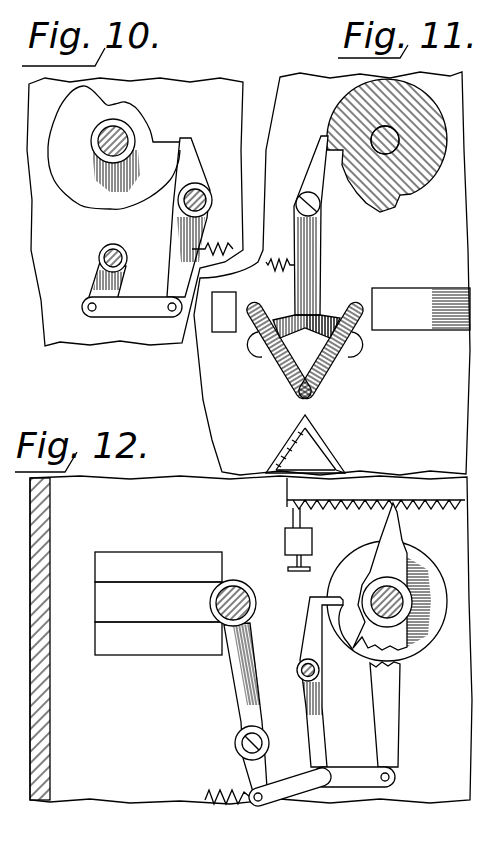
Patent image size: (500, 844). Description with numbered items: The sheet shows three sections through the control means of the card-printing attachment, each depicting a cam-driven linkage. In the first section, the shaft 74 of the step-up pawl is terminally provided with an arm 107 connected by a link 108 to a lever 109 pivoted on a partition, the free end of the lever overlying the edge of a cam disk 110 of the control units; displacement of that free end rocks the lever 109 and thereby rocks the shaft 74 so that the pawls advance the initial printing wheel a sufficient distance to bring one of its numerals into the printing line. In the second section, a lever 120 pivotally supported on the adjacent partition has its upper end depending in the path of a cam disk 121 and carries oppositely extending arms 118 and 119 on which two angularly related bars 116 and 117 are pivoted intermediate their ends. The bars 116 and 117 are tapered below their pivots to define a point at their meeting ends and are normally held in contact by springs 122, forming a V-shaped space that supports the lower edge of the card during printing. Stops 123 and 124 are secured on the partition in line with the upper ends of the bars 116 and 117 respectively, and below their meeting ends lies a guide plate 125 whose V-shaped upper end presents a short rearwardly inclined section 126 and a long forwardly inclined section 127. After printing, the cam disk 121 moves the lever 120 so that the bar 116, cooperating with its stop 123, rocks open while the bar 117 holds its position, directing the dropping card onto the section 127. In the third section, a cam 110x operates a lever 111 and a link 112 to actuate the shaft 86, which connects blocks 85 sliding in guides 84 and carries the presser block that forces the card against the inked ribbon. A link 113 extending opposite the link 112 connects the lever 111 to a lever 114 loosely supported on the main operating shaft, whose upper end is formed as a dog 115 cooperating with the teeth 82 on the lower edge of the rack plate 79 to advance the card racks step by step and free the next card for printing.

In FIG. 10, the cam disk 110 is at (181, 162).
In FIG. 10, the shaft of the step-up pawl 74 is at (110, 222).
In FIG. 10, the arm 107 is at (100, 273).
In FIG. 10, the lever 109 is at (172, 267).
In FIG. 10, the link 108 is at (128, 308).
In FIG. 11, the cam disk 121 is at (415, 188).
In FIG. 11, the lever 120 is at (314, 262).
In FIG. 11, the arm 118 is at (279, 316).
In FIG. 11, the arm 119 is at (327, 320).
In FIG. 11, the bar 116 is at (278, 372).
In FIG. 11, the bar 117 is at (329, 370).
In FIG. 11, the spring 122 is at (252, 352).
In FIG. 11, the stop 123 is at (224, 312).
In FIG. 11, the stop 124 is at (428, 307).
In FIG. 11, the guide plate 125 is at (315, 420).
In FIG. 11, the rearwardly inclined section 126 is at (333, 448).
In FIG. 11, the forwardly inclined section 127 is at (281, 465).
In FIG. 12, the plate 79 is at (357, 496).
In FIG. 12, the teeth 82 is at (338, 510).
In FIG. 12, the dog 115 is at (391, 505).
In FIG. 12, the cam 110x is at (415, 552).
In FIG. 12, the guide 84 is at (158, 567).
In FIG. 12, the block 85 is at (158, 618).
In FIG. 12, the shaft 86 is at (256, 592).
In FIG. 12, the lever 111 is at (310, 637).
In FIG. 12, the lever 114 is at (393, 697).
In FIG. 12, the link 112 is at (312, 789).
In FIG. 12, the link 113 is at (365, 780).